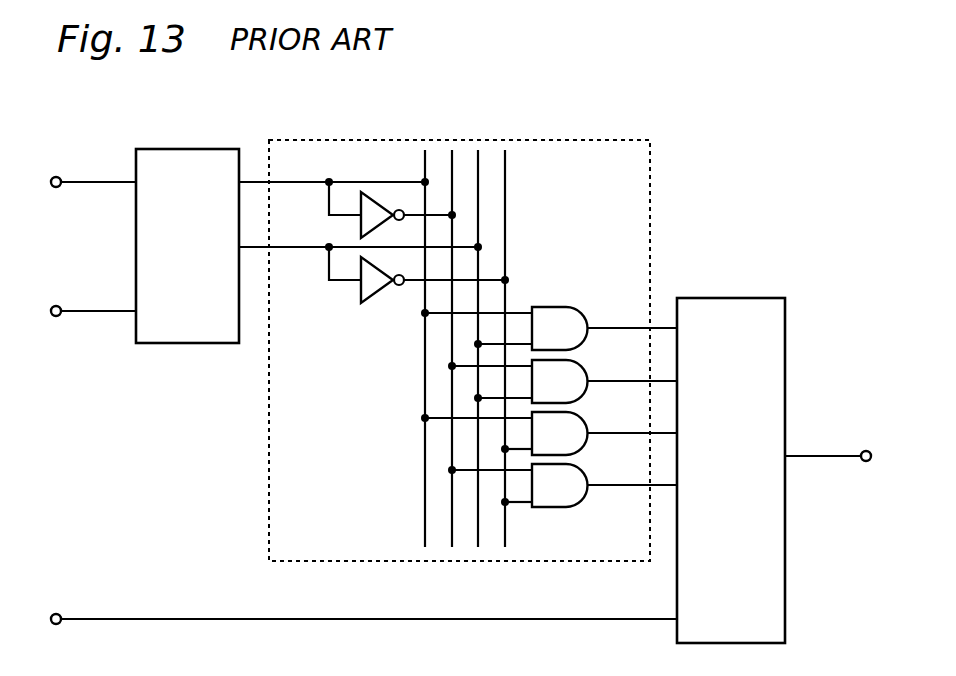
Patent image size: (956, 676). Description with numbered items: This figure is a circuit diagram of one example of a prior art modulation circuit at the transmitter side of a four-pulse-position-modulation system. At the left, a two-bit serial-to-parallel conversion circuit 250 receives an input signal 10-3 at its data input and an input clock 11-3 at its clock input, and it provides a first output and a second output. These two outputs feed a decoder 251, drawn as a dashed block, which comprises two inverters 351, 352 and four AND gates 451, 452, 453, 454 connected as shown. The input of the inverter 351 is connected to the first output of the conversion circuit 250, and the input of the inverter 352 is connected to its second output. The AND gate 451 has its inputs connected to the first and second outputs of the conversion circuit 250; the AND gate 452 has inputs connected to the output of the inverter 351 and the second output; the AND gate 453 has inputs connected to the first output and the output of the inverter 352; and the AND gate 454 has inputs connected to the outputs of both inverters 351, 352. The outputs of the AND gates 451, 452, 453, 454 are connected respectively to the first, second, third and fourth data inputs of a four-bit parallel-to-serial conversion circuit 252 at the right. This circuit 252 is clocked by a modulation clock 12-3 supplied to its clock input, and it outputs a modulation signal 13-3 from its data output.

The two-bit serial-to-parallel conversion circuit 250 is at (194, 149).
The decoder 251 is at (458, 322).
The four-bit parallel-to-serial conversion circuit 252 is at (738, 298).
The inverter 351 is at (358, 223).
The inverter 352 is at (358, 290).
The AND gate 451 is at (585, 320).
The AND gate 452 is at (585, 372).
The AND gate 453 is at (585, 424).
The AND gate 454 is at (585, 476).
The input signal 10-3 is at (97, 182).
The input clock 11-3 is at (97, 311).
The modulation clock 12-3 is at (94, 619).
The modulation signal 13-3 is at (828, 456).